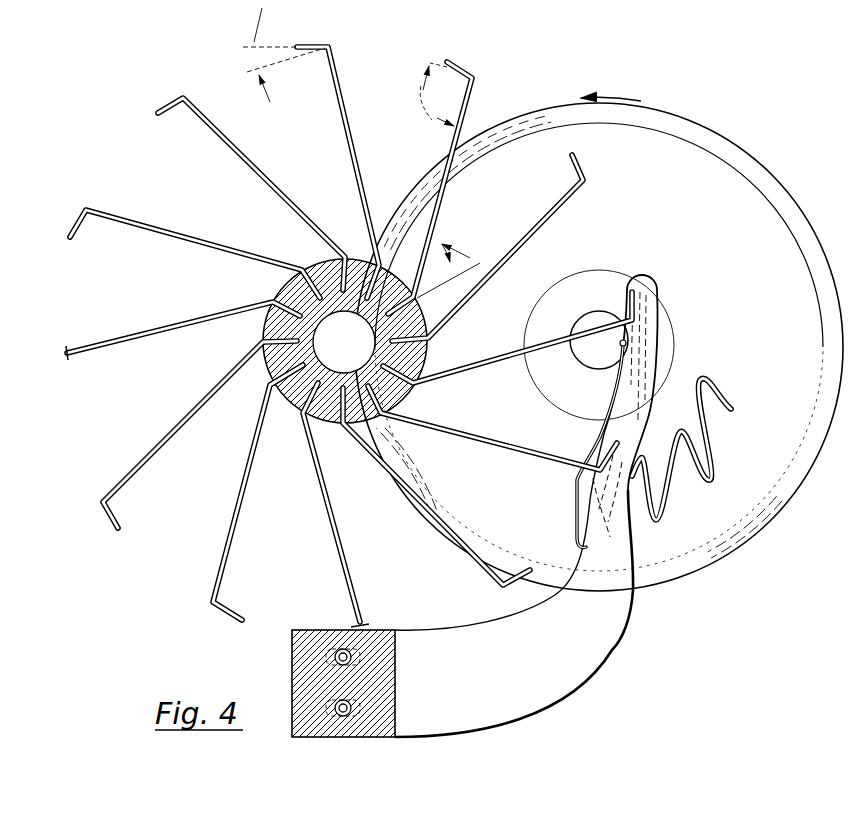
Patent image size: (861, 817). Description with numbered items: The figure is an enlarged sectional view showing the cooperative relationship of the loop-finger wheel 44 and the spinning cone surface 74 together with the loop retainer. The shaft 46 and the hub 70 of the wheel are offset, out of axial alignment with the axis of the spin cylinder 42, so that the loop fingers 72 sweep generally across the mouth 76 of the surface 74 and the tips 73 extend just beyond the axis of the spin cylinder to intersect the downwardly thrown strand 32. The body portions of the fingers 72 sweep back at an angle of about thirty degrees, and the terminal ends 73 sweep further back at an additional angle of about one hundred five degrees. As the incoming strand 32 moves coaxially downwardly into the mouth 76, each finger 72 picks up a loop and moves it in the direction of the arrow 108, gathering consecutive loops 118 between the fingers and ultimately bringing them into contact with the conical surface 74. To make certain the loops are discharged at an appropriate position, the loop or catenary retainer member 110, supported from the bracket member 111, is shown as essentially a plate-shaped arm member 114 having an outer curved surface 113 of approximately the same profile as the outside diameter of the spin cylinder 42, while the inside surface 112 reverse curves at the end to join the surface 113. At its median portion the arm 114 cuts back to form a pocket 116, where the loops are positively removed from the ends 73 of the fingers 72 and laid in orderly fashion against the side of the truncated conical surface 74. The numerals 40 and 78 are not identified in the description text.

The strand 32 is at (592, 370).
The bent end portion of arm 40 is at (418, 72).
The spin cylinder 42 is at (754, 538).
The loop-finger wheel 44 is at (343, 57).
The shaft 46 is at (290, 343).
The hub 70 is at (323, 259).
The loop fingers 72 is at (349, 317).
The terminal ends of fingers 73 is at (325, 44).
The spinning cone surface 74 is at (688, 245).
The mouth 76 is at (732, 186).
The shaft boss 78 is at (574, 334).
The arrow 108 is at (666, 414).
The loop retainer member 110 is at (604, 670).
The bracket member 111 is at (398, 724).
The inside surface 112 is at (603, 444).
The outer curved surface 113 is at (660, 338).
The plate-shaped arm member 114 is at (662, 304).
The pocket 116 is at (571, 506).
The loops 118 is at (576, 542).